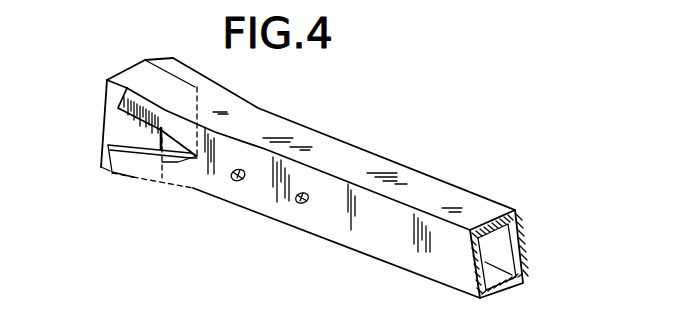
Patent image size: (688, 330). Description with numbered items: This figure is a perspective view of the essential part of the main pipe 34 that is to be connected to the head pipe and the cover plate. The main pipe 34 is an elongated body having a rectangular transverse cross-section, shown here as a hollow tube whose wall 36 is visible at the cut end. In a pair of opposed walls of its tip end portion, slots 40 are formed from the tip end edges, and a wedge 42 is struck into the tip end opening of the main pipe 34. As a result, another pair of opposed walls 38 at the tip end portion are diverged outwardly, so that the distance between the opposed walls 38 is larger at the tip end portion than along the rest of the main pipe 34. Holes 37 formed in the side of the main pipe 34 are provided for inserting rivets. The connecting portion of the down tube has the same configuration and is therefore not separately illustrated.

The main pipe 34 is at (413, 276).
The tube wall 36 is at (360, 233).
The holes 37 is at (296, 203).
The opposed walls 38 is at (357, 152).
The slots 40 is at (141, 160).
The wedge 42 is at (111, 118).